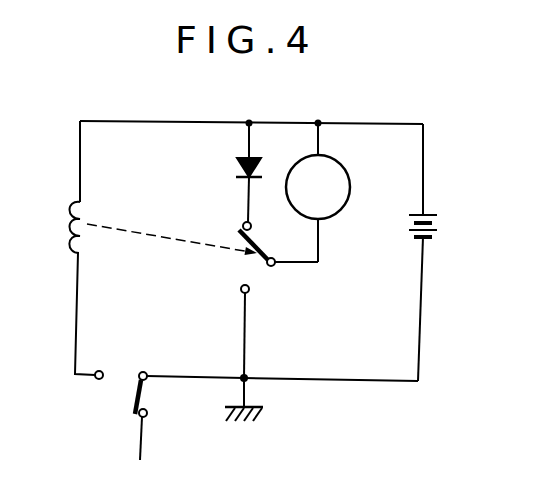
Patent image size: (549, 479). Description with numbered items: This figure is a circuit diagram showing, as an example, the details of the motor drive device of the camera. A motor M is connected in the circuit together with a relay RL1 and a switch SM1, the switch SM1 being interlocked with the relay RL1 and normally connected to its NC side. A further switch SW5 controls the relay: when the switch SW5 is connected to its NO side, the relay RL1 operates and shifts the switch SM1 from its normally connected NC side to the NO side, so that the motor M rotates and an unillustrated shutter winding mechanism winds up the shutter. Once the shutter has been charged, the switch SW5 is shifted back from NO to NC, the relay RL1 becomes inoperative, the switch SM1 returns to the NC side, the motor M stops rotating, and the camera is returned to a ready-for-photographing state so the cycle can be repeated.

The relay RL1 is at (163, 230).
The switch SM1 is at (258, 256).
The motor M is at (318, 187).
The switch SW5 is at (138, 398).